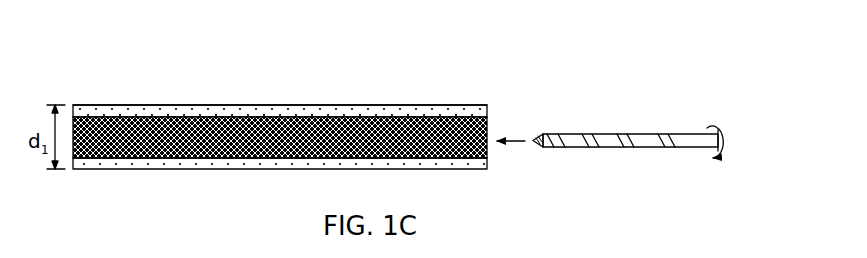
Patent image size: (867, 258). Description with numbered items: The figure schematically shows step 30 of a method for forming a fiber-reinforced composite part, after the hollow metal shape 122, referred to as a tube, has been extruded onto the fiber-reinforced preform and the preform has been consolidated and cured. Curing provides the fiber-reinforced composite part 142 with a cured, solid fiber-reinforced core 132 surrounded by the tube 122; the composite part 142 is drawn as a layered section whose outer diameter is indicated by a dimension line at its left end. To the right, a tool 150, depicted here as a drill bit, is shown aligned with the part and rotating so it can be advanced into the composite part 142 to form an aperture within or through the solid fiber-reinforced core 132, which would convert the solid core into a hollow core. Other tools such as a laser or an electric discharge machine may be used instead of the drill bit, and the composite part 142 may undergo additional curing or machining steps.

The step 30 is at (312, 113).
The hollow metal shape 122 is at (130, 108).
The cured fiber-reinforced core 132 is at (143, 148).
The fiber-reinforced composite part 142 is at (208, 90).
The tool 150 is at (598, 133).